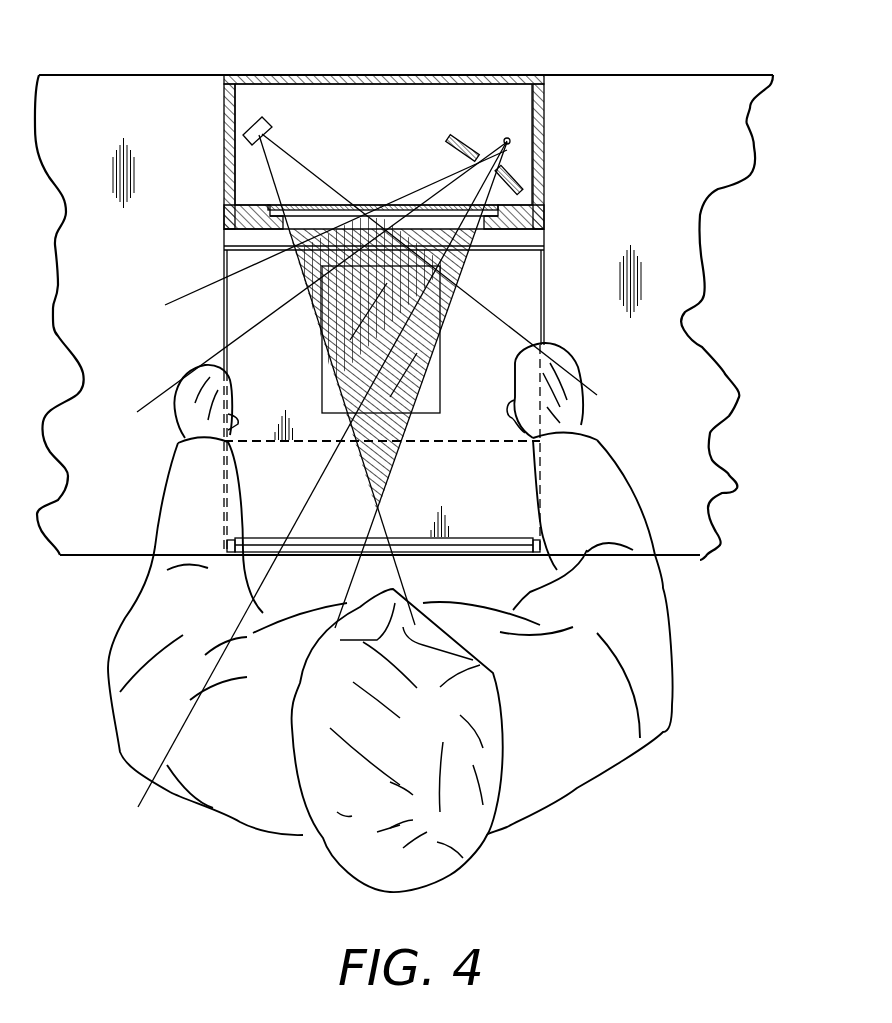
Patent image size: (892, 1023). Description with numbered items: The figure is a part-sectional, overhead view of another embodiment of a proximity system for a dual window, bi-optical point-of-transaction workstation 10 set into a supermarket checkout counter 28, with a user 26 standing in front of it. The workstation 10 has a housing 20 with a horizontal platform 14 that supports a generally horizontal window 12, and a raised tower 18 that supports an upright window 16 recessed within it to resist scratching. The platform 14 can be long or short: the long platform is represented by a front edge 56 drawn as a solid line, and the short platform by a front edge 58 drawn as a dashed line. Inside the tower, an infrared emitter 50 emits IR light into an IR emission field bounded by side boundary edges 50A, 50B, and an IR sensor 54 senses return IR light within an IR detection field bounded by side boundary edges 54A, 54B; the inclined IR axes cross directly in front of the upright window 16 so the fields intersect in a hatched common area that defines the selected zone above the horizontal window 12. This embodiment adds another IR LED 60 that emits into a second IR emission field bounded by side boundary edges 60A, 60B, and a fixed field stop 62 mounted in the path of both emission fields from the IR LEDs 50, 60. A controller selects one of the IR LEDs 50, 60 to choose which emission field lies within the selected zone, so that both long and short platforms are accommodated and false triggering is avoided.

The point-of-transaction workstation 10 is at (588, 82).
The horizontal window 12 is at (322, 387).
The platform 14 is at (541, 247).
The upright window 16 is at (385, 207).
The tower 18 is at (541, 118).
The housing 20 is at (220, 70).
The user 26 is at (215, 802).
The checkout counter 28 is at (690, 80).
The infrared emitter 50 is at (507, 138).
The side boundary edge 50A is at (252, 322).
The side boundary edge 50B is at (472, 265).
The infrared sensor 54 is at (268, 118).
The side boundary edge 54A is at (278, 160).
The side boundary edge 54B is at (270, 176).
The front edge 56 is at (490, 538).
The front edge 58 is at (458, 443).
The IR LED 60 is at (510, 143).
The side boundary edge 60A is at (165, 303).
The side boundary edge 60B is at (305, 505).
The fixed field stop 62 is at (467, 142).